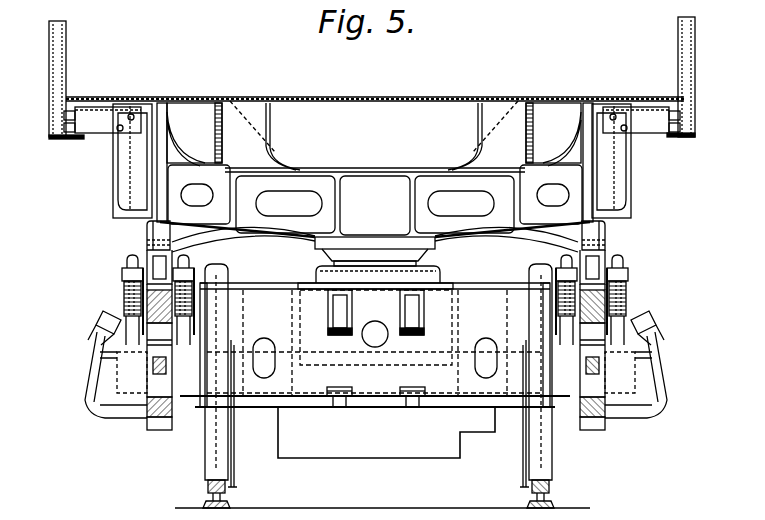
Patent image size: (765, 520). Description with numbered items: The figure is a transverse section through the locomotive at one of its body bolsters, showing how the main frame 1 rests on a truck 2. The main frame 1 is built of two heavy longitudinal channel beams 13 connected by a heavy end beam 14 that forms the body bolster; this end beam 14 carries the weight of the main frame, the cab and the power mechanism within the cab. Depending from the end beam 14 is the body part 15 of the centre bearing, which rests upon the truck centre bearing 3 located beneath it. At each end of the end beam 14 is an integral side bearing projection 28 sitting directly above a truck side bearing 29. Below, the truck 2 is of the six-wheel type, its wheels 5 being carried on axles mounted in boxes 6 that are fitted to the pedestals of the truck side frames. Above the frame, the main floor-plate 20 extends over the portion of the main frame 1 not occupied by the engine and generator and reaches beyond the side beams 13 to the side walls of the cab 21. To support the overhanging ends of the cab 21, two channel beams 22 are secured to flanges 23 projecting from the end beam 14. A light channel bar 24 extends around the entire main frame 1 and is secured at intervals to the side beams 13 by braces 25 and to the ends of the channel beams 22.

The main frame 1 is at (334, 170).
The truck 2 is at (386, 442).
The centre bearing 3 is at (430, 268).
The wheel 5 is at (201, 457).
The box 6 is at (374, 364).
The longitudinal channel beam 13 is at (122, 179).
The end beam 14 is at (425, 169).
The body part of the centre bearing 15 is at (311, 247).
The main floor-plate 20 is at (187, 98).
The cab 21 is at (370, 77).
The channel beam 22 is at (218, 141).
The flange 23 is at (271, 124).
The light channel bar 24 is at (50, 138).
The brace 25 is at (92, 135).
The side bearing projection 28 is at (148, 236).
The truck side bearing 29 is at (174, 258).